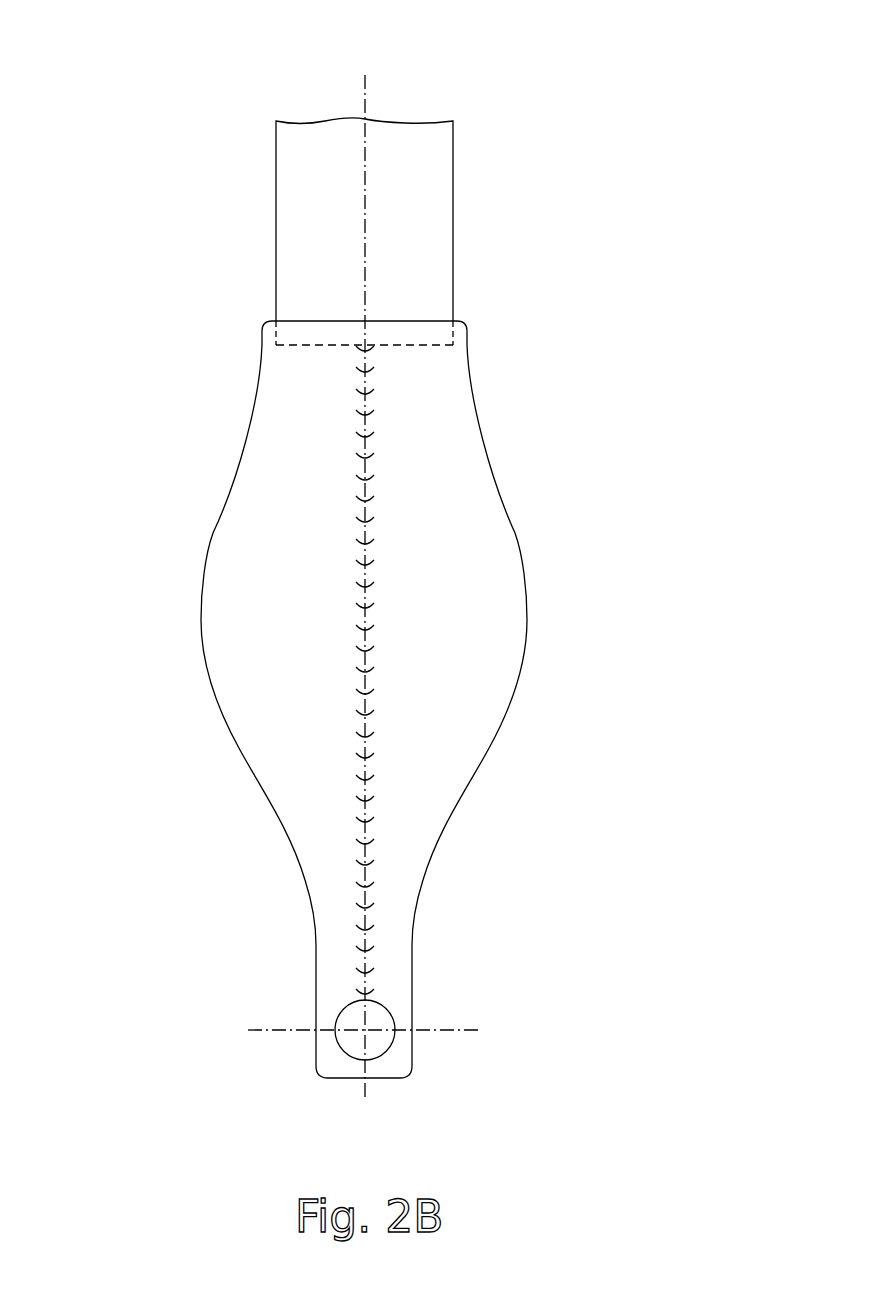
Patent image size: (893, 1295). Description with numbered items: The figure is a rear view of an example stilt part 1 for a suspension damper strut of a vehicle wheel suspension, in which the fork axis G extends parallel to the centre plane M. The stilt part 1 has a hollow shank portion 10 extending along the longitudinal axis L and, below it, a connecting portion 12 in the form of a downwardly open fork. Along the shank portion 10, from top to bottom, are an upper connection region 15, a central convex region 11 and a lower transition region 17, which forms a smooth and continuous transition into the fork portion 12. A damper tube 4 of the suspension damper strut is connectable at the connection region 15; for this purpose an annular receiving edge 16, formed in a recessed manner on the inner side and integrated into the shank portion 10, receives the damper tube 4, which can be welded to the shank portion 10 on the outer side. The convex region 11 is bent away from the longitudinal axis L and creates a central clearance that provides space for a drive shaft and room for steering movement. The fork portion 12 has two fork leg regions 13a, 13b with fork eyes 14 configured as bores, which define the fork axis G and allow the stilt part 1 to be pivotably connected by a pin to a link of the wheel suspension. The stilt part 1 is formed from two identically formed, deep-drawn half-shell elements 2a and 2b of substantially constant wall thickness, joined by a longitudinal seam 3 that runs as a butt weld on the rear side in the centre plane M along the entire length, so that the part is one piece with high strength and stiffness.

The stilt part 1 is at (345, 580).
The half-shell element 2a is at (225, 653).
The half-shell element 2b is at (503, 627).
The longitudinal seam 3 is at (383, 473).
The damper tube 4 is at (430, 202).
The shank portion 10 is at (345, 747).
The convex region 11 is at (345, 669).
The connecting portion 12 is at (339, 1037).
The fork leg region 13a is at (333, 960).
The fork leg region 13b is at (400, 962).
The fork eye 14 is at (350, 1040).
The connection region 15 is at (350, 316).
The receiving edge 16 is at (468, 350).
The transition region 17 is at (247, 877).
The longitudinal axis L is at (365, 98).
The fork axis G is at (456, 1038).
The centre plane M is at (365, 1083).